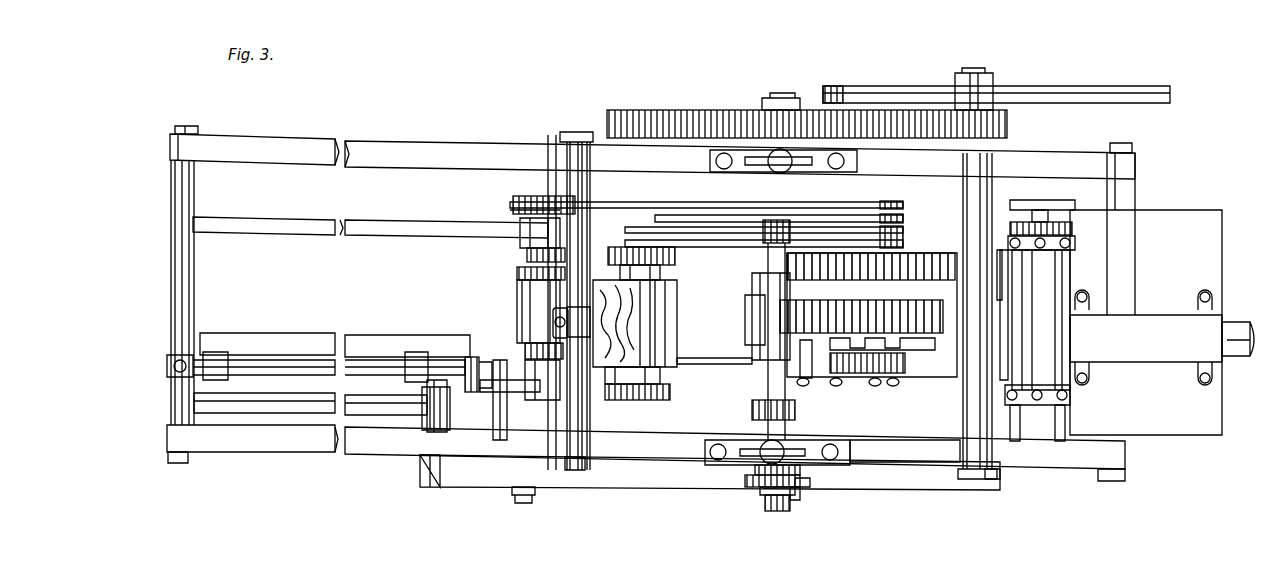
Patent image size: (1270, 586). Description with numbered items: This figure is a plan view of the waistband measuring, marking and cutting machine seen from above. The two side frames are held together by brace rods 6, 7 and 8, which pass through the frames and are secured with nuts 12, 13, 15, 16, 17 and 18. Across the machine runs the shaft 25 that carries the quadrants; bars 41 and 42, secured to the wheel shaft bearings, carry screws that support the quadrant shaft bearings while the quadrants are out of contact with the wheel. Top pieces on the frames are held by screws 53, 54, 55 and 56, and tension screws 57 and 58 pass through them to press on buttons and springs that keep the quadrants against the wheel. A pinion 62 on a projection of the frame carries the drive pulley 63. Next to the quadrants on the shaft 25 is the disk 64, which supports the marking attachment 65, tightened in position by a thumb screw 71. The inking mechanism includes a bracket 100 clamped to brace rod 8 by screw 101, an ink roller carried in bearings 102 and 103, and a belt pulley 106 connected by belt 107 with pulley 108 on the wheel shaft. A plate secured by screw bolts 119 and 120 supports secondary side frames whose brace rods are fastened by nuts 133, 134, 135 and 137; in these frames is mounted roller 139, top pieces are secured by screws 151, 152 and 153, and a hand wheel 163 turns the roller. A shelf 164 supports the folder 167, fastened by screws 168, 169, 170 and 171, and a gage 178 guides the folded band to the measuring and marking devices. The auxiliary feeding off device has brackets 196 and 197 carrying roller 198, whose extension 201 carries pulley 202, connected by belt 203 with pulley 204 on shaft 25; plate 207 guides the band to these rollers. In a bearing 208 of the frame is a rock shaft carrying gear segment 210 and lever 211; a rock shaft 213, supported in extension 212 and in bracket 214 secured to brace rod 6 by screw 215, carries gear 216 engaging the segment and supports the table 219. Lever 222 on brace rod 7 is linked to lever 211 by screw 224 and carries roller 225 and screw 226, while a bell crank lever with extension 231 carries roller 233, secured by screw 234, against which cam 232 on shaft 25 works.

The brace rod 6 is at (175, 265).
The brace rod 7 is at (963, 425).
The brace rod 8 is at (548, 178).
The nut 12 is at (182, 463).
The nut 13 is at (590, 470).
The nut 15 is at (582, 132).
The nut 16 is at (192, 126).
The nut 17 is at (1000, 140).
The nut 18 is at (992, 479).
The shaft 25 is at (768, 407).
The bar 41 is at (800, 470).
The bar 42 is at (815, 110).
The screw 53 is at (832, 444).
The screw 54 is at (718, 444).
The screw 55 is at (724, 150).
The screw 56 is at (845, 161).
The tension screw 57 is at (790, 480).
The tension screw 58 is at (780, 98).
The pinion 62 is at (995, 90).
The drive pulley 63 is at (925, 78).
The disk 64 is at (715, 364).
The marking attachment 65 is at (905, 345).
The thumb screw 71 is at (805, 386).
The bracket 100 is at (550, 304).
The screw 101 is at (553, 322).
The bearing 102 is at (605, 400).
The bearing 103 is at (612, 247).
The belt pulley 106 is at (662, 215).
The belt 107 is at (690, 227).
The pulley 108 is at (905, 227).
The screw bolt 119 is at (1112, 481).
The screw bolt 120 is at (1140, 138).
The nut 133 is at (1060, 405).
The nut 134 is at (1035, 200).
The nut 135 is at (1012, 405).
The nut 137 is at (1072, 230).
The roller 139 is at (1040, 340).
The screw 151 is at (1070, 395).
The screw 152 is at (1005, 240).
The screw 153 is at (1075, 243).
The hand wheel 163 is at (1072, 196).
The shelf 164 is at (1195, 225).
The folder 167 is at (1162, 338).
The screw 168 is at (1205, 292).
The screw 169 is at (1205, 383).
The screw 170 is at (1088, 297).
The screw 171 is at (1090, 378).
The gage 178 is at (851, 315).
The bracket 196 is at (540, 359).
The bracket 197 is at (527, 256).
The roller 198 is at (517, 273).
The extension 201 is at (520, 228).
The pulley 202 is at (520, 200).
The belt 203 is at (615, 195).
The pulley 204 is at (765, 220).
The plate 207 is at (712, 362).
The bearing 208 is at (427, 405).
The gear segment 210 is at (450, 415).
The lever 211 is at (470, 490).
The extension 212 is at (507, 392).
The rock shaft 213 is at (398, 352).
The bracket 214 is at (175, 355).
The screw 215 is at (167, 366).
The gear 216 is at (470, 357).
The table 219 is at (272, 345).
The lever 222 is at (912, 490).
The screw 224 is at (522, 503).
The roller 225 is at (765, 492).
The screw 226 is at (770, 511).
The extension 231 is at (997, 260).
The cam 232 is at (745, 480).
The roller 233 is at (805, 487).
The screw 234 is at (800, 500).